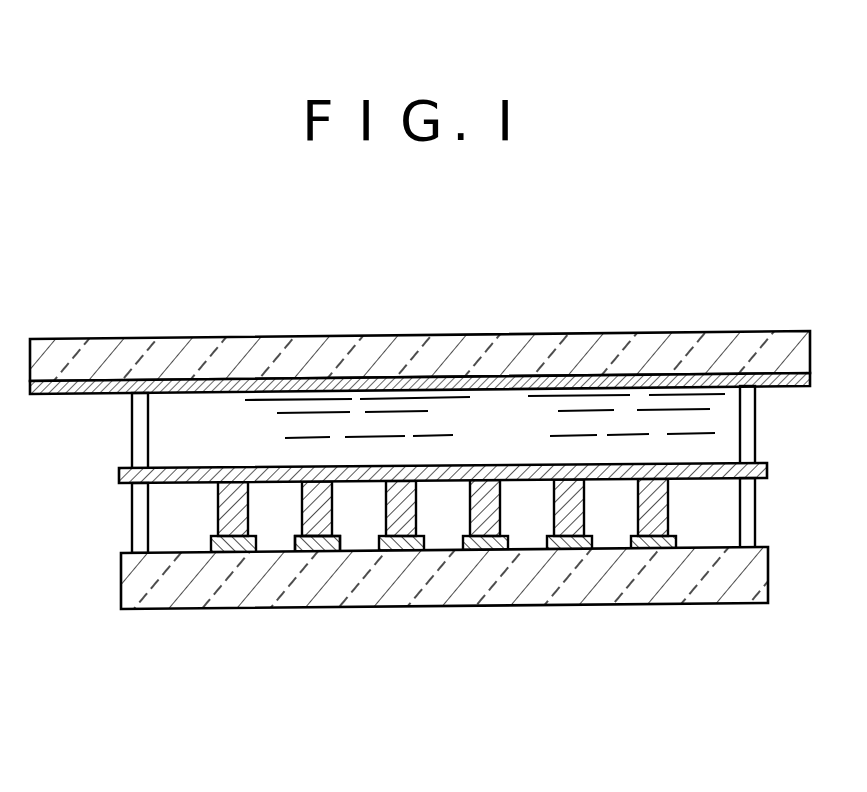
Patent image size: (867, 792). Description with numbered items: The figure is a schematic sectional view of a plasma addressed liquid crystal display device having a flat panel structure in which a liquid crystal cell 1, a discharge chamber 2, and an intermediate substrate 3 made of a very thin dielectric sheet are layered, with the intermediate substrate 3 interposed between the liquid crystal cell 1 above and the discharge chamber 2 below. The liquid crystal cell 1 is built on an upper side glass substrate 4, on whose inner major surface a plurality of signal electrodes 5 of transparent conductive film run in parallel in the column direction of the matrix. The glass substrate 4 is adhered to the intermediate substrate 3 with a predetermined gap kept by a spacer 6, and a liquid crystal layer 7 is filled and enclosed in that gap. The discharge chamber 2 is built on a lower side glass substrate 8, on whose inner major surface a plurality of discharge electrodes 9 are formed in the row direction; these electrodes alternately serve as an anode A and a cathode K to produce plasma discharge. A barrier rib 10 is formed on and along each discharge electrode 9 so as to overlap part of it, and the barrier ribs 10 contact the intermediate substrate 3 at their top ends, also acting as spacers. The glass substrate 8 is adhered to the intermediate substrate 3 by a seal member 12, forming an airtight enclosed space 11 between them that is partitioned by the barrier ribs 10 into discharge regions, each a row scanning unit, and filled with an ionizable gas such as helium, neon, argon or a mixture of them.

The liquid crystal cell 1 is at (448, 376).
The discharge chamber 2 is at (467, 579).
The intermediate substrate 3 is at (768, 470).
The upper side glass substrate 4 is at (545, 352).
The signal electrodes 5 is at (95, 395).
The spacer 6 is at (756, 421).
The liquid crystal layer 7 is at (218, 413).
The lower side glass substrate 8 is at (387, 593).
The discharge electrodes 9 is at (652, 543).
The barrier rib 10 is at (557, 503).
The airtight enclosed space 11 is at (183, 543).
The seal member 12 is at (130, 516).
The anode A is at (233, 553).
The cathode K is at (312, 547).